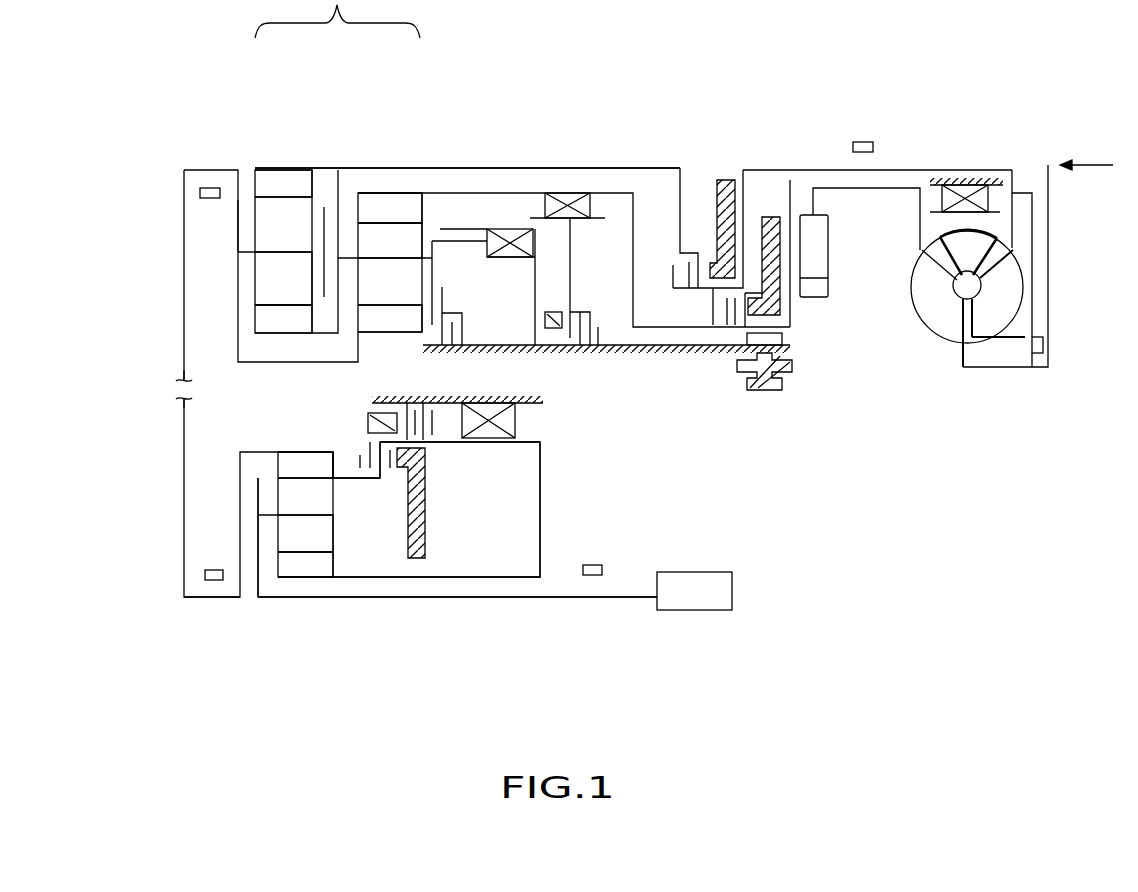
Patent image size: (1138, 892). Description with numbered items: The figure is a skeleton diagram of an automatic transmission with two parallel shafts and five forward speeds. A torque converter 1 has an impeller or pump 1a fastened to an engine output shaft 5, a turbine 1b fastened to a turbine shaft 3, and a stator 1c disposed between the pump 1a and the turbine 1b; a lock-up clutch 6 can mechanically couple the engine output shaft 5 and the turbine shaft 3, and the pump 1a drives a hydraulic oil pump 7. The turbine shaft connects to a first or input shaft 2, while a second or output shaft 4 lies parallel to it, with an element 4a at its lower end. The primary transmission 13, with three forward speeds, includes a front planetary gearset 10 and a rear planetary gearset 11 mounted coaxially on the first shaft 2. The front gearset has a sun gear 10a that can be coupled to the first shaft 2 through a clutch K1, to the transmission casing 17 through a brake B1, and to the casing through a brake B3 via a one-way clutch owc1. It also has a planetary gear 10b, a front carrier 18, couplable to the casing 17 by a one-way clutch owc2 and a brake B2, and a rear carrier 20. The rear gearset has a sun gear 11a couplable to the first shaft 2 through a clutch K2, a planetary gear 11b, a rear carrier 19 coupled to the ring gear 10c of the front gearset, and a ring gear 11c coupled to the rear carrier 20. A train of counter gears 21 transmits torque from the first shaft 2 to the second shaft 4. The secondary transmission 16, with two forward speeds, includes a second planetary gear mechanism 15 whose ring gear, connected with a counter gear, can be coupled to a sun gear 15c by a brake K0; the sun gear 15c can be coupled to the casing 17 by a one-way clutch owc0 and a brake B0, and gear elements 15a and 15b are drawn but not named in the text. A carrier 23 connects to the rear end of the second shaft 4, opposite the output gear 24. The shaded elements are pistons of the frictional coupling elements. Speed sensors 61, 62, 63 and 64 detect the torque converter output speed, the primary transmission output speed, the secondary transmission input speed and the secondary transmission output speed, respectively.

The torque converter 1 is at (946, 318).
The impeller or pump 1a is at (912, 303).
The turbine 1b is at (990, 318).
The stator 1c is at (947, 240).
The first or input shaft 2 is at (770, 168).
The turbine shaft 3 is at (1013, 171).
The second or output shaft 4 is at (603, 597).
The output member 4a is at (213, 600).
The engine output shaft 5 is at (1113, 165).
The lock-up clutch 6 is at (1038, 355).
The hydraulic oil pump 7 is at (818, 297).
The front planetary gearset 10 is at (403, 130).
The sun gear 10a is at (405, 200).
The planetary gear 10b is at (415, 231).
The ring gear 10c is at (390, 333).
The rear planetary gearset 11 is at (267, 140).
The sun gear 11a is at (293, 183).
The planetary gear 11b is at (278, 283).
The ring gear 11c is at (268, 332).
The primary transmission 13 is at (434, 126).
The second planetary gear mechanism 15 is at (307, 603).
The sun gear of auxiliary planetary gear set 15a is at (313, 455).
The pinion of auxiliary planetary gear set 15b is at (325, 532).
The sun gear 15c is at (322, 577).
The secondary transmission 16 is at (379, 605).
The transmission casing 17 is at (592, 348).
The front carrier 18 is at (436, 273).
The rear carrier 19 is at (236, 212).
The rear carrier 20 is at (333, 243).
The train of counter gears 21 is at (163, 358).
The carrier 23 is at (258, 582).
The output gear 24 is at (688, 577).
The speed sensor 61 is at (873, 147).
The speed sensor 62 is at (200, 197).
The speed sensor 63 is at (213, 570).
The speed sensor 64 is at (605, 565).
The brake B0 is at (440, 440).
The brake B1 is at (783, 340).
The brake B2 is at (470, 344).
The brake B3 is at (598, 328).
The brake K0 is at (365, 444).
The clutch K1 is at (709, 300).
The clutch K2 is at (673, 279).
The one-way clutch owc0 is at (515, 422).
The one-way clutch owc1 is at (570, 193).
The one-way clutch owc2 is at (507, 228).